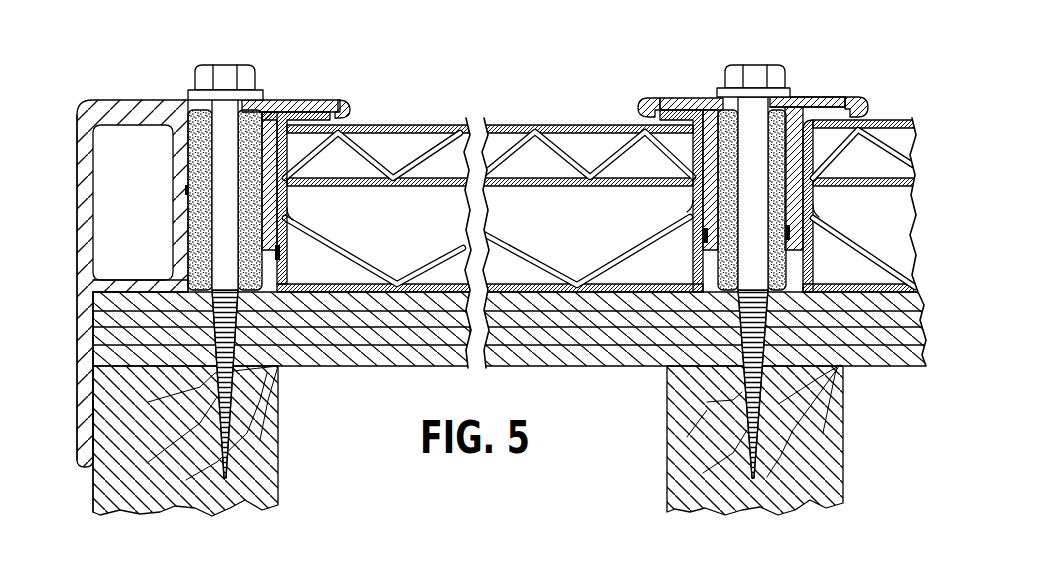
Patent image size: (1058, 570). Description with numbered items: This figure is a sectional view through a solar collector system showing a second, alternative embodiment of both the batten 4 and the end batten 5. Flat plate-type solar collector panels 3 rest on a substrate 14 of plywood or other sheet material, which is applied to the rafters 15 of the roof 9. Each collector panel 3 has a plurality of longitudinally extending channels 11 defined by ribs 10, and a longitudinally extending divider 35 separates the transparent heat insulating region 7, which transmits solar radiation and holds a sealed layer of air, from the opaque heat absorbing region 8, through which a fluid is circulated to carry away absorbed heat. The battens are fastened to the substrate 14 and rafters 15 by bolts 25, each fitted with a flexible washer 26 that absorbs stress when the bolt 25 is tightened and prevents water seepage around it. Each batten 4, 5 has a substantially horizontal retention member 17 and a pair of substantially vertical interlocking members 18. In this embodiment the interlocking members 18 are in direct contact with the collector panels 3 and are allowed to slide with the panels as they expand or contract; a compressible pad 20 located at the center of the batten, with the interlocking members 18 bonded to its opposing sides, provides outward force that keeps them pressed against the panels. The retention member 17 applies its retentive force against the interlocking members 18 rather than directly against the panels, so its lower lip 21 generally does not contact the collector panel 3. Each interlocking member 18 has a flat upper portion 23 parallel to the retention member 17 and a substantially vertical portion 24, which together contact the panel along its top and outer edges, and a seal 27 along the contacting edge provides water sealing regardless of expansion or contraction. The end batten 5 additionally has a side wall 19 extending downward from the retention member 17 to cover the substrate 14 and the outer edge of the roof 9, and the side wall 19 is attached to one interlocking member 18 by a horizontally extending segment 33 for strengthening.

The solar collector panel 3 is at (893, 113).
The batten 4 is at (823, 92).
The end batten 5 is at (95, 100).
The heat insulating region 7 is at (918, 130).
The heat absorbing region 8 is at (892, 240).
The roof 9 is at (95, 487).
The rib 10 is at (420, 166).
The channel 11 is at (370, 137).
The substrate 14 is at (352, 368).
The rafter 15 is at (280, 460).
The retention member 17 is at (675, 105).
The interlocking member 18 is at (186, 190).
The side wall 19 is at (88, 222).
The compressible pad 20 is at (190, 122).
The lower lip 21 is at (655, 95).
The flat upper portion 23 is at (290, 122).
The vertical portion 24 is at (283, 166).
The bolt 25 is at (232, 63).
The flexible washer 26 is at (262, 98).
The seal 27 is at (286, 211).
The horizontally extending segment 33 is at (147, 285).
The divider 35 is at (545, 187).